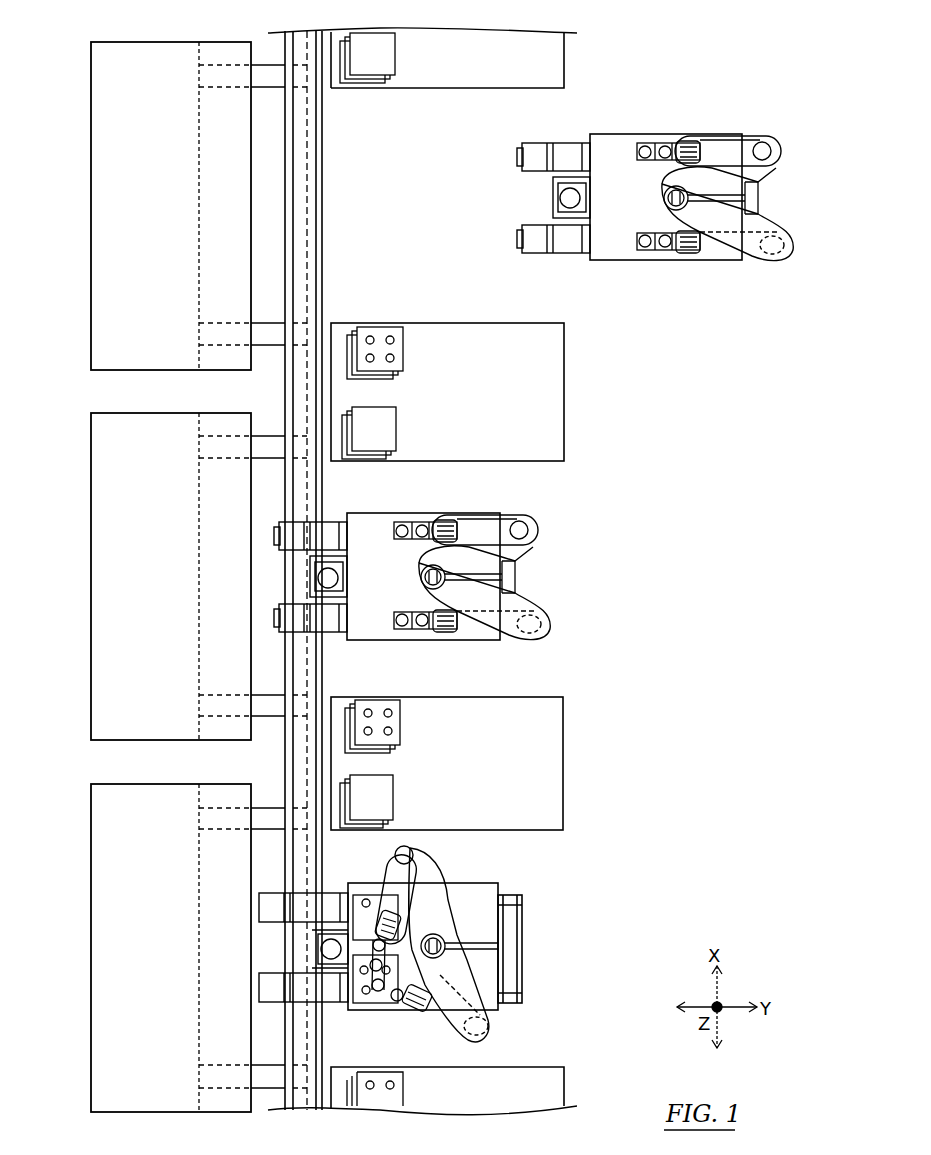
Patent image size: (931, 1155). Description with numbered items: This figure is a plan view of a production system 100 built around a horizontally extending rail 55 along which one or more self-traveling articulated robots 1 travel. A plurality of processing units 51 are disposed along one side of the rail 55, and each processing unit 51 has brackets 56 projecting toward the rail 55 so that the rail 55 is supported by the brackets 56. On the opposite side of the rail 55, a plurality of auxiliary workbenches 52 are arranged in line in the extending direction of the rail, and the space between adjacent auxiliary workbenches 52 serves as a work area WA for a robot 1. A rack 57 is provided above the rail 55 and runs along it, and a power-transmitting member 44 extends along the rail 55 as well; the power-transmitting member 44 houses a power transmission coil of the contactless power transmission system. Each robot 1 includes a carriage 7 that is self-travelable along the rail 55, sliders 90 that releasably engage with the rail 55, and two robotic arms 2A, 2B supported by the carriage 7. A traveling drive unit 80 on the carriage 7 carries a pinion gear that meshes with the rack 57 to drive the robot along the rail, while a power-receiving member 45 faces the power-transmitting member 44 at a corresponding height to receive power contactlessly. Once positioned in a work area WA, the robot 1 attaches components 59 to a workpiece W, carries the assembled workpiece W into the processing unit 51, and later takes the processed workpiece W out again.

The self-traveling articulated robot 1 is at (790, 202).
The robotic arm 2A is at (774, 152).
The robotic arm 2B is at (778, 250).
The carriage 7 is at (655, 262).
The power-transmitting member 44 is at (325, 210).
The power-receiving member 45 is at (553, 205).
The processing unit 51 is at (91, 192).
The auxiliary workbench 52 is at (566, 58).
The rail 55 is at (284, 50).
The bracket 56 is at (273, 436).
The rack 57 is at (323, 140).
The component 59 is at (398, 330).
The traveling drive unit 80 is at (553, 195).
The slider 90 is at (522, 150).
The production system 100 is at (752, 537).
The workpiece W is at (372, 62).
The work area WA is at (443, 265).